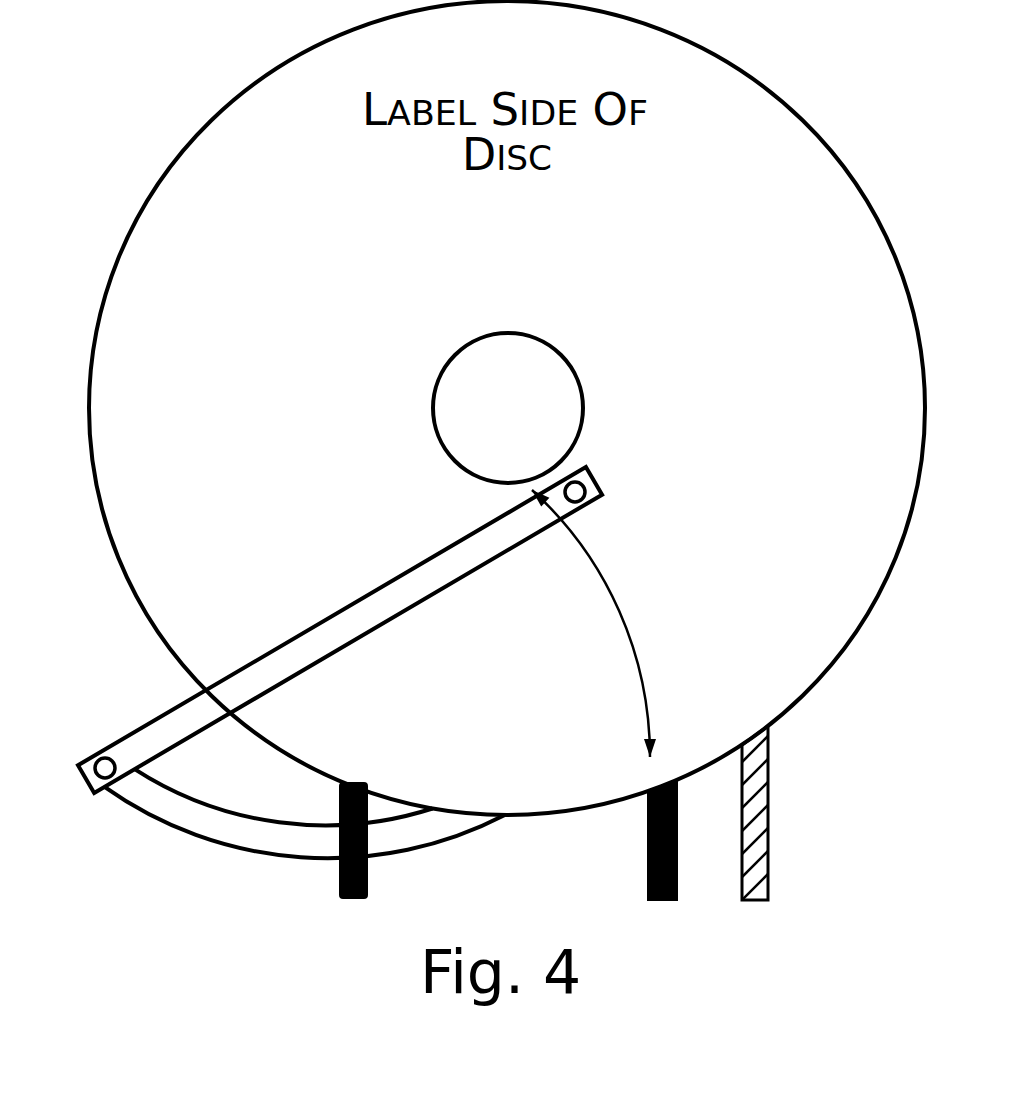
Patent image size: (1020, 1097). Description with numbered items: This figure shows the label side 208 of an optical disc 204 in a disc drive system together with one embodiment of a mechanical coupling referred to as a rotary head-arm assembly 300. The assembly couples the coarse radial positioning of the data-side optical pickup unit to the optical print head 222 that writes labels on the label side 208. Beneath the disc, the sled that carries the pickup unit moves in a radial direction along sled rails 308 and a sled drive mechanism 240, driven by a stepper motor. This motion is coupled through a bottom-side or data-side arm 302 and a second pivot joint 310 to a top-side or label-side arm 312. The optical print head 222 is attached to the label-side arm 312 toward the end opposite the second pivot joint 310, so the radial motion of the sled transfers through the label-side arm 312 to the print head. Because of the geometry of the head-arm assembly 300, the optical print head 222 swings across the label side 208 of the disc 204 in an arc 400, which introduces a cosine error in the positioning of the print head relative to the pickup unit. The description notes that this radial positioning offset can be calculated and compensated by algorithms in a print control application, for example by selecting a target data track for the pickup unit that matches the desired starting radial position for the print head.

The optical disc 204 is at (302, 47).
The label side 208 is at (225, 133).
The optical print head 222 is at (590, 478).
The sled drive mechanism 240 is at (768, 858).
The rotary head-arm assembly 300 is at (112, 838).
The data-side arm 302 is at (228, 847).
The sled rails 308 is at (367, 875).
The second pivot joint 310 is at (106, 746).
The label-side arm 312 is at (328, 645).
The arc 400 is at (645, 636).